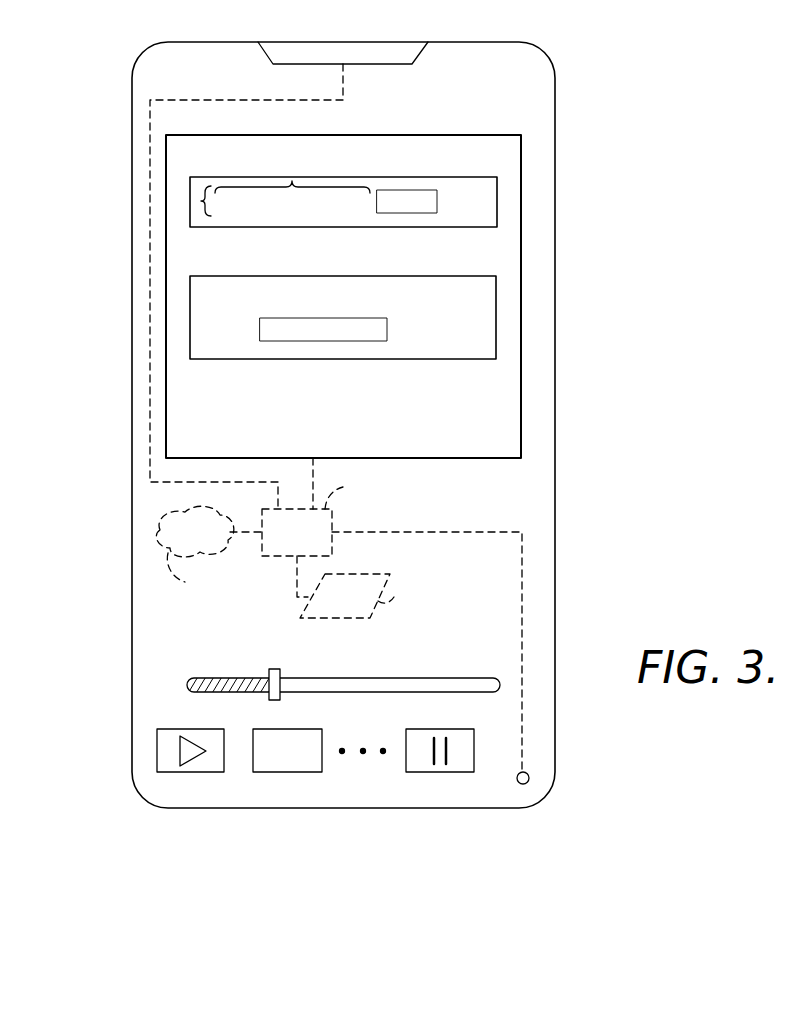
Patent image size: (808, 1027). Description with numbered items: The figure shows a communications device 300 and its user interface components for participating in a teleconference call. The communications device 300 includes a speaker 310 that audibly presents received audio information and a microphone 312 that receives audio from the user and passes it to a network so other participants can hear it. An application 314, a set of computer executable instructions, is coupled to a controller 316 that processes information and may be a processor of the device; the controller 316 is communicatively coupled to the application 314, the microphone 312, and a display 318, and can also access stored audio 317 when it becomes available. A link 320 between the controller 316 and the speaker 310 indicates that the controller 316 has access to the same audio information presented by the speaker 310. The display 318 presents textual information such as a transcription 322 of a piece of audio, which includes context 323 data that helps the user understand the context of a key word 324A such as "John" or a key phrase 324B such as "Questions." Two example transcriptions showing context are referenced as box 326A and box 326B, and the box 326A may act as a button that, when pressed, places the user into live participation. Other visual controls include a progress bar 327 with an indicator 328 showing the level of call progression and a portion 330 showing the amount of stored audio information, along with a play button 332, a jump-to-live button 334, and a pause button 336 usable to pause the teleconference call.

The communications device 300 is at (540, 44).
The speaker 310 is at (404, 53).
The microphone 312 is at (528, 784).
The application 314 is at (219, 549).
The controller 316 is at (392, 624).
The stored audio 317 is at (401, 596).
The display 318 is at (440, 458).
The link 320 is at (150, 423).
The transcription 322 is at (204, 201).
The context 323 is at (292, 181).
The key word 324A is at (412, 190).
The key phrase 324B is at (323, 341).
The box 326A is at (432, 227).
The transcription example 326B is at (448, 359).
The progress bar 327 is at (343, 667).
The indicator 328 is at (275, 670).
The portion 330 is at (270, 667).
The play button 332 is at (185, 772).
The jump-to-live button 334 is at (283, 772).
The pause button 336 is at (440, 772).